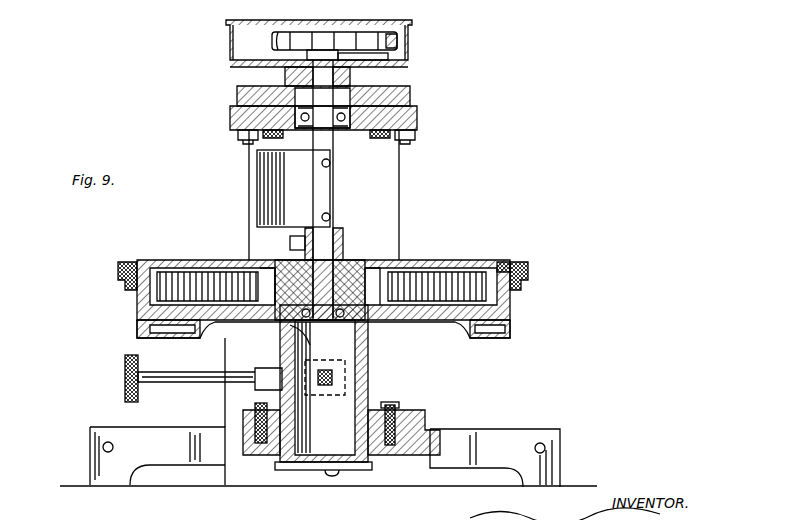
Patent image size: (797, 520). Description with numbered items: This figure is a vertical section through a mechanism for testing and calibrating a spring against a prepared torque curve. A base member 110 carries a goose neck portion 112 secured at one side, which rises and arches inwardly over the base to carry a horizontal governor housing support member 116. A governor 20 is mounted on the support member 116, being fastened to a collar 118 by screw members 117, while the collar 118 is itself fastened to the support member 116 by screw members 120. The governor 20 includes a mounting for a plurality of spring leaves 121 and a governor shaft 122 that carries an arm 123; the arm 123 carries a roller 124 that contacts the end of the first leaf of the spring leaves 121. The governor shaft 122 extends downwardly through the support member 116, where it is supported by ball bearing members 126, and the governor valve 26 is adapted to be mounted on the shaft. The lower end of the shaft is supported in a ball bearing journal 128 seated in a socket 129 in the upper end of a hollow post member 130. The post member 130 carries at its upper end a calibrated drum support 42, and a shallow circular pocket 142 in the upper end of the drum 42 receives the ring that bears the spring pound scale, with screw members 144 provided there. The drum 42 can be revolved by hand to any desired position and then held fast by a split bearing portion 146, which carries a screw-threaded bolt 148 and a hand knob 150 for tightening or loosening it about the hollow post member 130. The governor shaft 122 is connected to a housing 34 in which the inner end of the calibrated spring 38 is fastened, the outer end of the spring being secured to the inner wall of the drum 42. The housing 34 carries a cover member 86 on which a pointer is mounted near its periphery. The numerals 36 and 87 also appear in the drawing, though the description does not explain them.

The governor 20 is at (410, 52).
The governor valve 26 is at (262, 200).
The housing 34 is at (406, 262).
The rotor winding 36 is at (474, 272).
The calibrated spring 38 is at (490, 297).
The calibrated drum support 42 is at (438, 322).
The cover member 86 is at (192, 250).
The boss 87 is at (270, 262).
The base member 110 is at (490, 432).
The goose neck portion 112 is at (391, 200).
The governor housing support member 116 is at (230, 118).
The screw members 117 is at (285, 76).
The collar 118 is at (237, 92).
The screw members 120 is at (248, 137).
The spring leaves 121 is at (374, 36).
The governor shaft 122 is at (329, 143).
The arm 123 is at (385, 62).
The roller 124 is at (396, 42).
The ball bearing members 126 is at (336, 134).
The ball bearing journal 128 is at (338, 326).
The socket 129 is at (300, 330).
The hollow post member 130 is at (310, 462).
The shallow circular pocket 142 is at (513, 270).
The screw members 144 is at (118, 277).
The split bearing portion 146 is at (357, 383).
The screw-threaded bolt 148 is at (205, 384).
The hand knob 150 is at (125, 380).